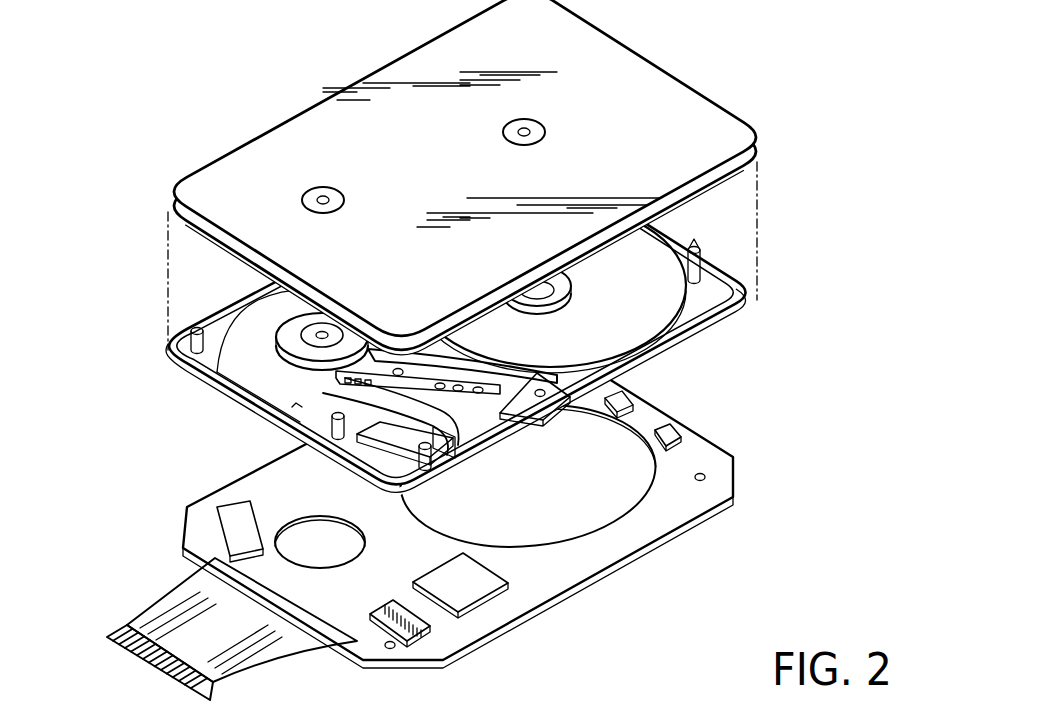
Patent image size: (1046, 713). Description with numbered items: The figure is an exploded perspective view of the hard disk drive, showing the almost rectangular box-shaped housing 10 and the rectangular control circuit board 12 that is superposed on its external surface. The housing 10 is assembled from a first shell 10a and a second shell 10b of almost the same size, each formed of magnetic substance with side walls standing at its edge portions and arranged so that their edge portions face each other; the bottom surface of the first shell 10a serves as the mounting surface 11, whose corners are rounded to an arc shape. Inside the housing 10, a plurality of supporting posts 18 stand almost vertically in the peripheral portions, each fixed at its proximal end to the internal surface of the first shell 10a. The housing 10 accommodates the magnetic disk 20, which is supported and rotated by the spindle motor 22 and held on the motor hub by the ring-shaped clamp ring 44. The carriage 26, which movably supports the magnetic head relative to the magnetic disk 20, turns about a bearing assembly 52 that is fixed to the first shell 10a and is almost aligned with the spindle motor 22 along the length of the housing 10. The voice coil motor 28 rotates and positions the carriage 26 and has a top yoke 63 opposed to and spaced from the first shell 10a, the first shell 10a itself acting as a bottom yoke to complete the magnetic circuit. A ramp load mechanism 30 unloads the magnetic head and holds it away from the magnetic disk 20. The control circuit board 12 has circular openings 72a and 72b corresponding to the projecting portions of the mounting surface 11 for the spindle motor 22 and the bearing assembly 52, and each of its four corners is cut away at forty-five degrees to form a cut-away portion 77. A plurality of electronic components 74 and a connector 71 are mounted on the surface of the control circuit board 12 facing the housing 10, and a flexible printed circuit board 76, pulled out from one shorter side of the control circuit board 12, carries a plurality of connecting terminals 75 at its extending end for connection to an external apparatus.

The housing 10 is at (454, 254).
The first shell 10a is at (454, 331).
The second shell 10b is at (667, 83).
The mounting surface 11 is at (228, 399).
The control circuit board 12 is at (444, 542).
The supporting posts 18 is at (698, 262).
The magnetic disk 20 is at (643, 330).
The spindle motor 22 is at (467, 359).
The carriage 26 is at (420, 370).
The voice coil motor 28 is at (248, 322).
The ramp load mechanism 30 is at (537, 400).
The clamp ring 44 is at (550, 300).
The bearing assembly 52 is at (330, 333).
The top yoke 63 is at (237, 364).
The connector 71 is at (430, 633).
The circular opening 72a is at (607, 517).
The circular opening 72b is at (313, 530).
The electronic components 74 is at (233, 507).
The connecting terminals 75 is at (122, 628).
The flexible printed circuit board 76 is at (273, 663).
The cut-away portion 77 is at (172, 528).